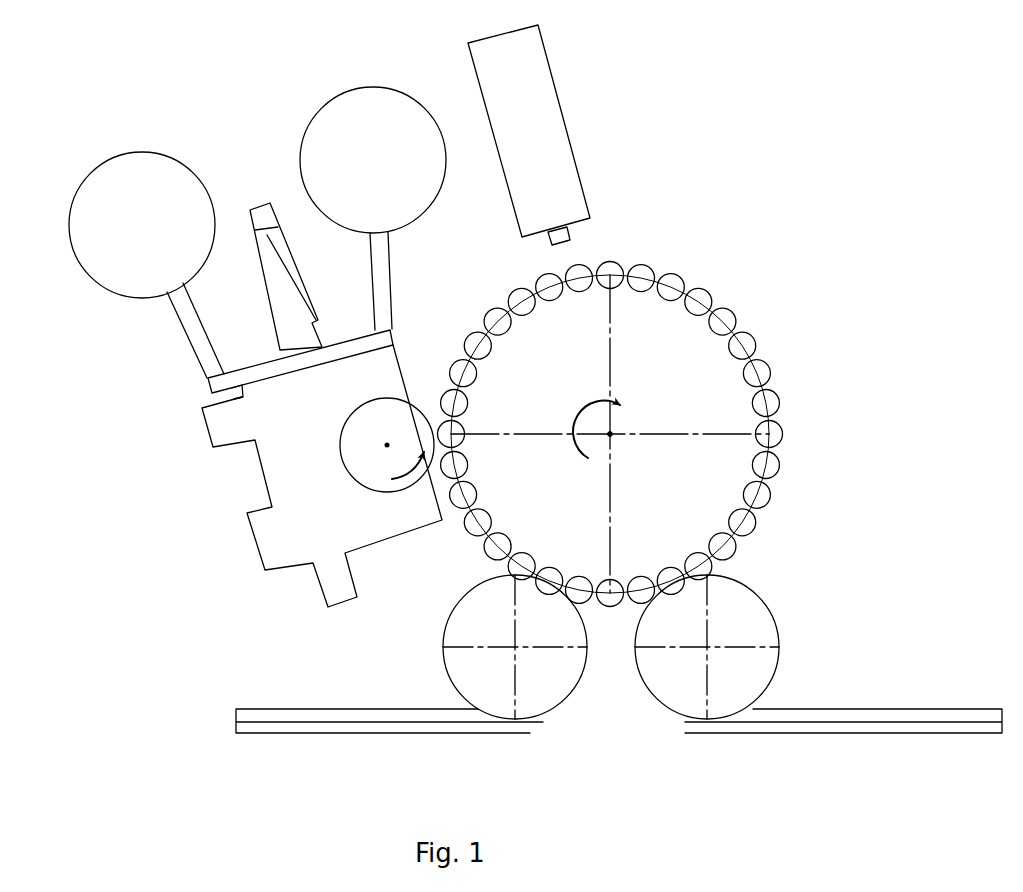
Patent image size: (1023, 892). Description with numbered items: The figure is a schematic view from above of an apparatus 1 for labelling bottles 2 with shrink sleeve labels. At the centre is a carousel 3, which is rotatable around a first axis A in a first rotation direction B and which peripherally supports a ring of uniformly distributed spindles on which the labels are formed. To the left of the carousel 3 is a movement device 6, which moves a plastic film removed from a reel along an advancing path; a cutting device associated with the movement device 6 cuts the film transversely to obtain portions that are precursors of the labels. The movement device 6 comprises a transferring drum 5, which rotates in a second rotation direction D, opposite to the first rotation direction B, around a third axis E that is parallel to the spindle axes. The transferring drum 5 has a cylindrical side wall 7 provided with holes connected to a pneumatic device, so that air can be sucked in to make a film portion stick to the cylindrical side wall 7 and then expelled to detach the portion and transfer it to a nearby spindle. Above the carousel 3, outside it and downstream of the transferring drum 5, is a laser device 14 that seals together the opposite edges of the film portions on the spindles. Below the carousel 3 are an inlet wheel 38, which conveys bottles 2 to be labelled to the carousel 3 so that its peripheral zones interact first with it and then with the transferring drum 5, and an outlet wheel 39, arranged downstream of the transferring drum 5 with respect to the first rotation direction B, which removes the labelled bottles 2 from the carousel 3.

The apparatus 1 is at (753, 186).
The bottles 2 is at (809, 417).
The carousel 3 is at (685, 388).
The transferring drum 5 is at (408, 425).
The movement device 6 is at (259, 338).
The cylindrical side wall 7 is at (347, 473).
The laser device 14 is at (600, 102).
The inlet wheel 38 is at (558, 682).
The outlet wheel 39 is at (728, 683).
The first axis A is at (616, 437).
The first rotation direction B is at (633, 400).
The second rotation direction D is at (410, 479).
The third axis E is at (387, 445).